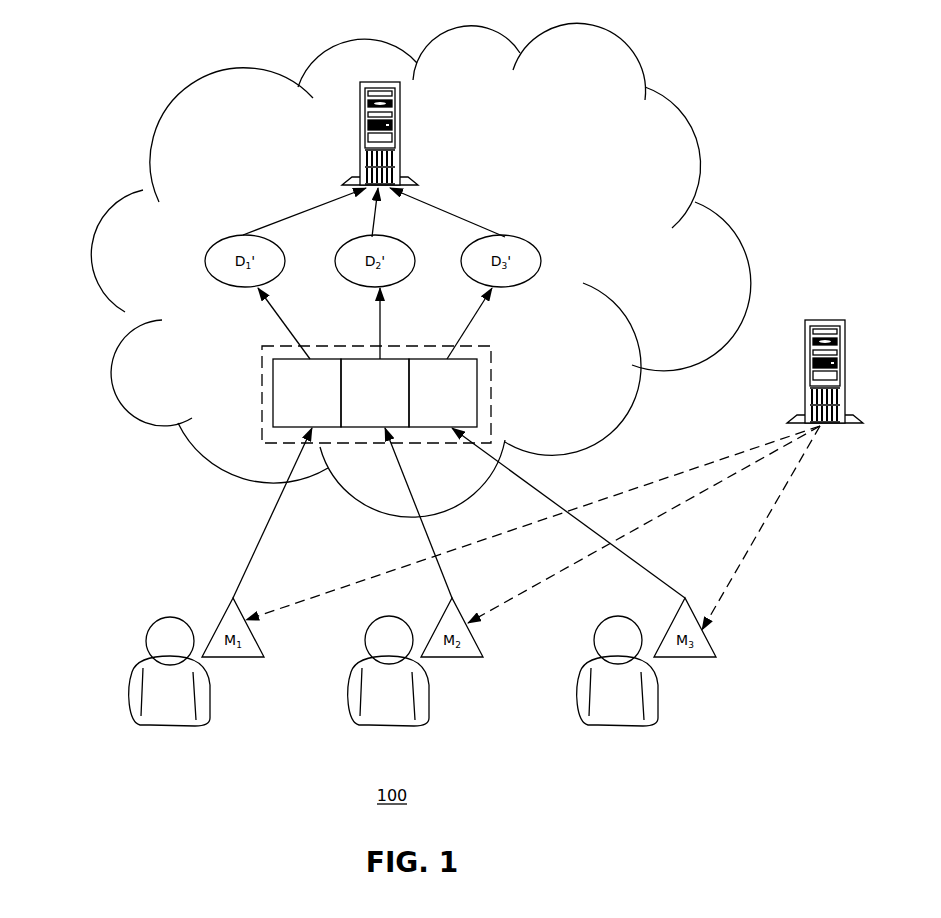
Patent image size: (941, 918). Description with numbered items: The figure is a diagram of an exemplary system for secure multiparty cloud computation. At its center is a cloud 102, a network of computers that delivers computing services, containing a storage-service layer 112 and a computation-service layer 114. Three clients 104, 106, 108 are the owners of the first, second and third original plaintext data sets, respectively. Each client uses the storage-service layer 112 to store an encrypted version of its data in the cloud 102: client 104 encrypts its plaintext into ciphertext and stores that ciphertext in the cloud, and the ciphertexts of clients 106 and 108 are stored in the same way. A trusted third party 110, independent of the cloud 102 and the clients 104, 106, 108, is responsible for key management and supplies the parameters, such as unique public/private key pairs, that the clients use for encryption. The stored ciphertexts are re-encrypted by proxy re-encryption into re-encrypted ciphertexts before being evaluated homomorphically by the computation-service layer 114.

The cloud 102 is at (148, 147).
The client 104 is at (162, 724).
The client 106 is at (380, 722).
The client 108 is at (613, 723).
The trusted third party 110 is at (845, 372).
The storage-service layer 112 is at (262, 385).
The computation-service layer 114 is at (400, 133).